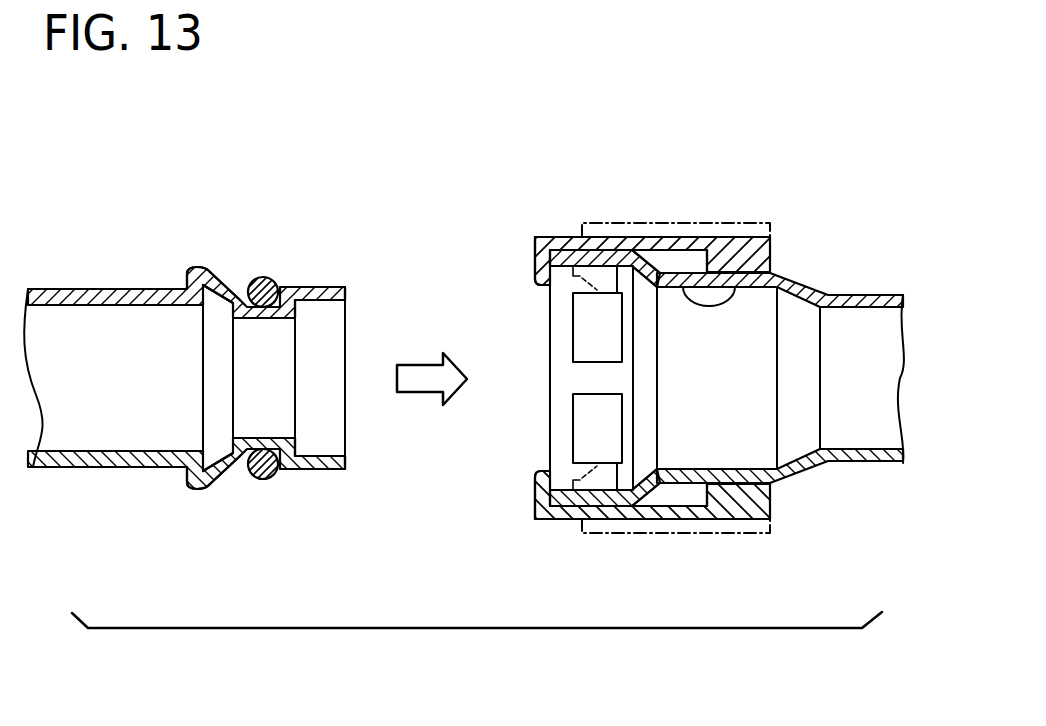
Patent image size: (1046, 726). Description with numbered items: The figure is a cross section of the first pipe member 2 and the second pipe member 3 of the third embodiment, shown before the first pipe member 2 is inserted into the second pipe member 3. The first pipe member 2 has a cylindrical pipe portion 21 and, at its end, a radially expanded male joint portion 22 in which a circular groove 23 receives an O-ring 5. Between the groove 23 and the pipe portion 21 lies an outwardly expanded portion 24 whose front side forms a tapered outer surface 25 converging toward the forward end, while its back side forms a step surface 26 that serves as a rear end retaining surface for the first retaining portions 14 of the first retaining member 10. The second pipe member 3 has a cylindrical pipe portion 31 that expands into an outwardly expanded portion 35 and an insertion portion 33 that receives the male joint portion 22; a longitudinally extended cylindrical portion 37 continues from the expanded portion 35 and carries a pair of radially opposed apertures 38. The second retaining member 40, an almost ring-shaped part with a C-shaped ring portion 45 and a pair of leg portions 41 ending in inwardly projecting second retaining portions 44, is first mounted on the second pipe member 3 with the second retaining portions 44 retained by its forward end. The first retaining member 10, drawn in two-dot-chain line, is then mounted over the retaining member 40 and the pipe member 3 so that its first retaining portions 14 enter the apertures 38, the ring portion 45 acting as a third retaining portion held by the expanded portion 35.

The first pipe member 2 is at (184, 382).
The cylindrical pipe portion 21 is at (118, 296).
The male joint portion 22 is at (322, 274).
The circular groove 23 is at (298, 475).
The outwardly expanded portion 24 is at (197, 488).
The tapered outer surface 25 is at (229, 478).
The step surface (rear end retaining surface) 26 is at (188, 477).
The O-ring 5 is at (267, 479).
The first retaining member 10 is at (621, 309).
The longitudinally extended cylindrical portion 37 is at (621, 302).
The outwardly expanded portion 35 is at (647, 236).
The C-shaped ring portion (third retaining portion) 45 is at (693, 252).
The second retaining portions 44 is at (536, 278).
The first retaining portions 14 is at (566, 296).
The second retaining member 40 is at (557, 251).
The leg portions 41 is at (620, 266).
The apertures 38 is at (588, 318).
The second pipe member 3 is at (782, 302).
The cylindrical pipe portion 31 is at (879, 296).
The insertion portion 33 is at (737, 287).